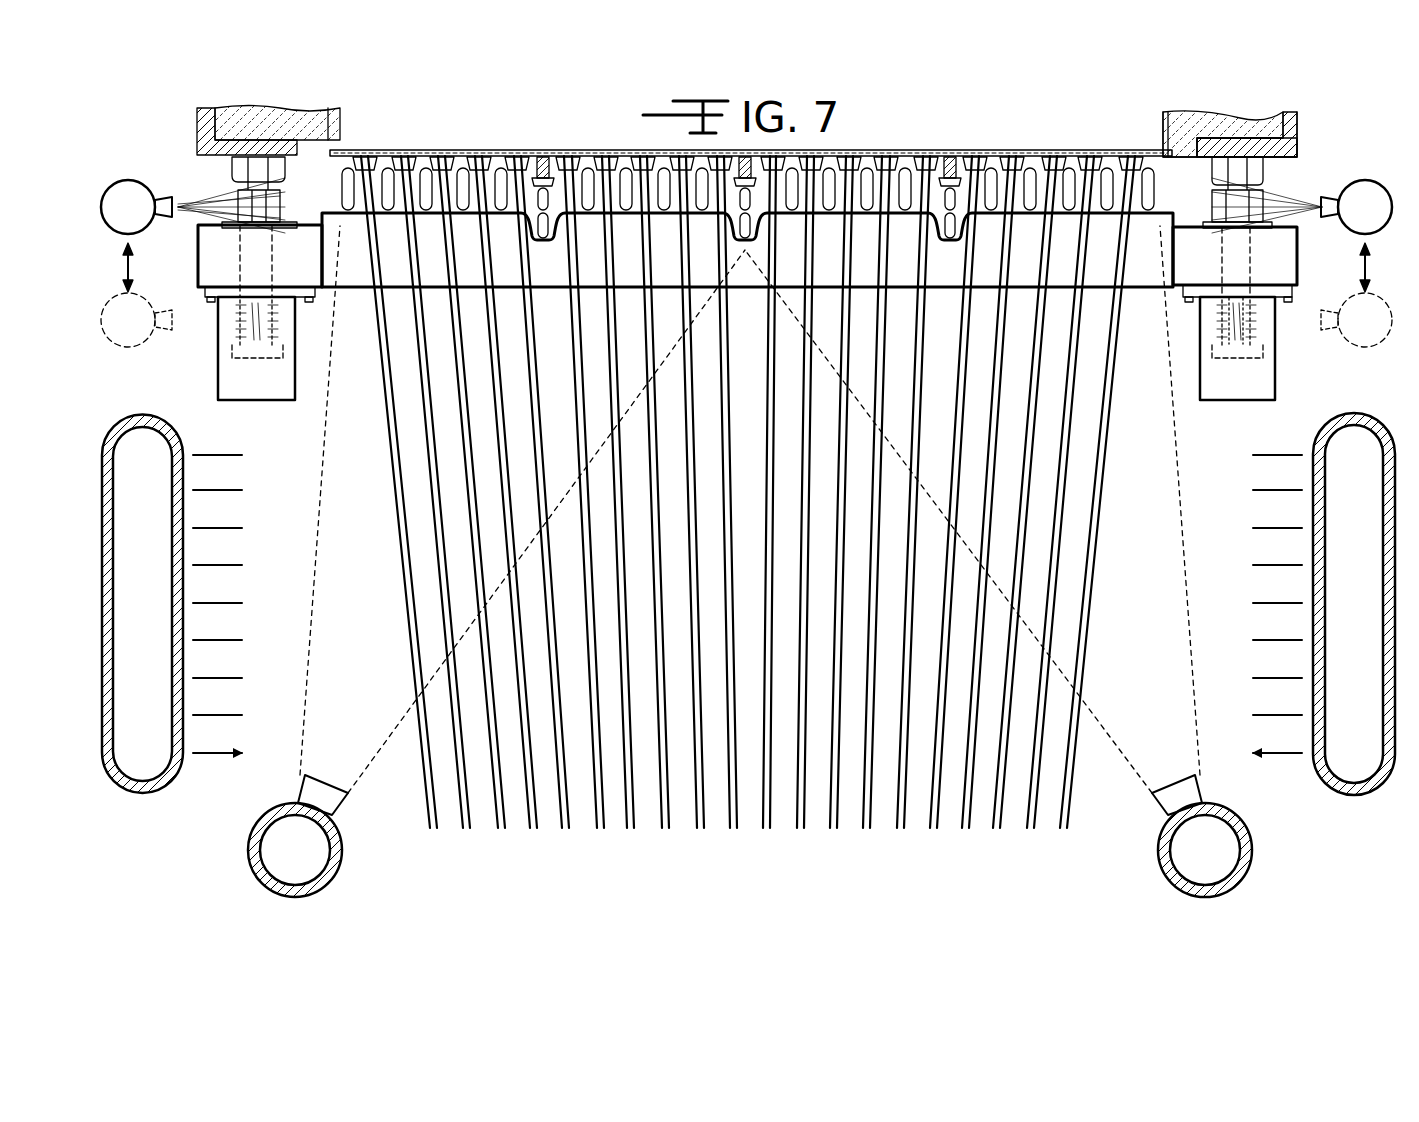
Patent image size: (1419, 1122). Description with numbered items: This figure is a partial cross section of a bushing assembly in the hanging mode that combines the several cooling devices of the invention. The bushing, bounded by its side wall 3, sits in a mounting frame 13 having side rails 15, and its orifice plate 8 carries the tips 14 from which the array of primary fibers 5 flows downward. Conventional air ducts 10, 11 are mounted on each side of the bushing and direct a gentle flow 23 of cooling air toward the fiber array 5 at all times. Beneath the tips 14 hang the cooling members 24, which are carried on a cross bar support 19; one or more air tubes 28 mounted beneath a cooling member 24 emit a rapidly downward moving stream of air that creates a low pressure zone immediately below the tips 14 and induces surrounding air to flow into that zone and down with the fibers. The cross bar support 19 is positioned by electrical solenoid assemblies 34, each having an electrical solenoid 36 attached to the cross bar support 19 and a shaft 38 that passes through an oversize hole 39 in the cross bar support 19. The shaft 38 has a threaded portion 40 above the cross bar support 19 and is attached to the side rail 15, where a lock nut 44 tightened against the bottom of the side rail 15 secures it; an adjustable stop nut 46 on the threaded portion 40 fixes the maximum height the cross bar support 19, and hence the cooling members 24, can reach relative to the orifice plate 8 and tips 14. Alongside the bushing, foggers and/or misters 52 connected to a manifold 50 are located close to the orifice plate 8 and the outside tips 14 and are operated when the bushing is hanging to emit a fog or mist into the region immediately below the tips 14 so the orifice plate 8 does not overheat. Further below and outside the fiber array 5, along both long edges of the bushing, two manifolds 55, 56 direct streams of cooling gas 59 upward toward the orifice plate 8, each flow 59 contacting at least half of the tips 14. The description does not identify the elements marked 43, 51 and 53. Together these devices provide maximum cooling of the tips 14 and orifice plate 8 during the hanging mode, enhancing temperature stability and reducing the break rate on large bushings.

The side wall 3 is at (1165, 125).
The array of fibers 5 is at (415, 836).
The orifice plate 8 is at (1052, 150).
The air duct 10 is at (1352, 413).
The air duct 11 is at (143, 414).
The mounting frame 13 is at (1300, 140).
The tips 14 is at (974, 160).
The side rail 15 is at (1290, 115).
The cross bar support 19 is at (1275, 256).
The flow of cooling air 23 is at (203, 565).
The cooling members 24 is at (540, 200).
The air tube 28 is at (745, 218).
The electrical solenoid assembly 34 is at (284, 402).
The electrical solenoid 36 is at (230, 332).
The shaft 38 is at (257, 266).
The oversize hole 39 is at (240, 242).
The threaded portion 40 is at (285, 186).
The actuator rod 43 is at (1258, 322).
The lock nut 44 is at (232, 168).
The adjustable stop nut 46 is at (232, 200).
The manifold 50 is at (1362, 205).
The left spray nozzle body 51 is at (128, 205).
The foggers and/or misters 52 is at (1330, 200).
The left nozzle tip 53 is at (163, 200).
The manifold 55 is at (1180, 884).
The manifold 56 is at (318, 884).
The streams of cooling gas 59 is at (333, 668).